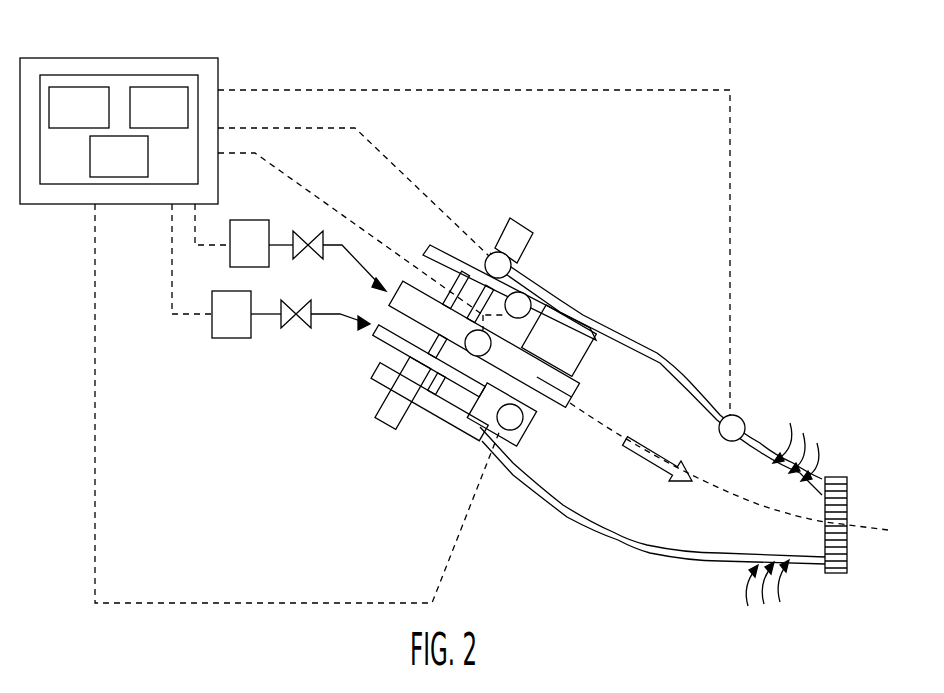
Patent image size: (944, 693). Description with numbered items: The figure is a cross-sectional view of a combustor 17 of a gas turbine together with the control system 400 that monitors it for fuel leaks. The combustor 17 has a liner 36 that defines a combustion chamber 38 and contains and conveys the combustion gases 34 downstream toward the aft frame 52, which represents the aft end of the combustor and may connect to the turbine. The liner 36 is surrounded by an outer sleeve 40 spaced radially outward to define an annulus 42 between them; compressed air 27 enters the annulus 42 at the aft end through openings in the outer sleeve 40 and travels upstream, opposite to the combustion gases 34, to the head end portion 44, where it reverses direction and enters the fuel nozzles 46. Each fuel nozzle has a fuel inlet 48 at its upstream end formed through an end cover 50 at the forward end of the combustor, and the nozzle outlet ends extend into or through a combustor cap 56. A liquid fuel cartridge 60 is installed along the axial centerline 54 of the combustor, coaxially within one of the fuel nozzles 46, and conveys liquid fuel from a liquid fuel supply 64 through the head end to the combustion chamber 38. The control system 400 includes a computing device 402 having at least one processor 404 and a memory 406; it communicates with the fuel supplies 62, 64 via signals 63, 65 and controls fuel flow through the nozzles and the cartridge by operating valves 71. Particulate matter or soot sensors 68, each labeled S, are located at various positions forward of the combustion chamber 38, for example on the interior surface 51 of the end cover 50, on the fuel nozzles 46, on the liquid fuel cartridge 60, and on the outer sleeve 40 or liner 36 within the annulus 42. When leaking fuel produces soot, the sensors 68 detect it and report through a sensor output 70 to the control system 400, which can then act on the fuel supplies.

The control system 400 is at (118, 57).
The computing system or device 402 is at (63, 121).
The processor 404 is at (143, 121).
The memory 406 is at (103, 171).
The sensor output 70 is at (433, 88).
The valves 71 is at (296, 232).
The liquid fuel supply 64 is at (238, 257).
The fuel supply 62 is at (220, 328).
The signal 65 is at (195, 208).
The signal 63 is at (172, 287).
The particulate matter sensors 68 is at (500, 232).
The combustor 17 is at (595, 252).
The combustor cap 56 is at (590, 325).
The outer sleeve 40 is at (653, 352).
The liquid fuel cartridge 60 is at (570, 403).
The combustion gases 34 is at (650, 446).
The combustion chamber 38 is at (564, 461).
The liner 36 is at (594, 513).
The annulus 42 is at (648, 556).
The compressed air 27 is at (817, 457).
The aft frame 52 is at (850, 488).
The axial centerline 54 is at (870, 523).
The fuel nozzles 46 is at (550, 355).
The fuel inlet 48 is at (386, 333).
The end cover 50 is at (393, 429).
The interior surface 51 is at (402, 432).
The head end portion 44 is at (472, 441).